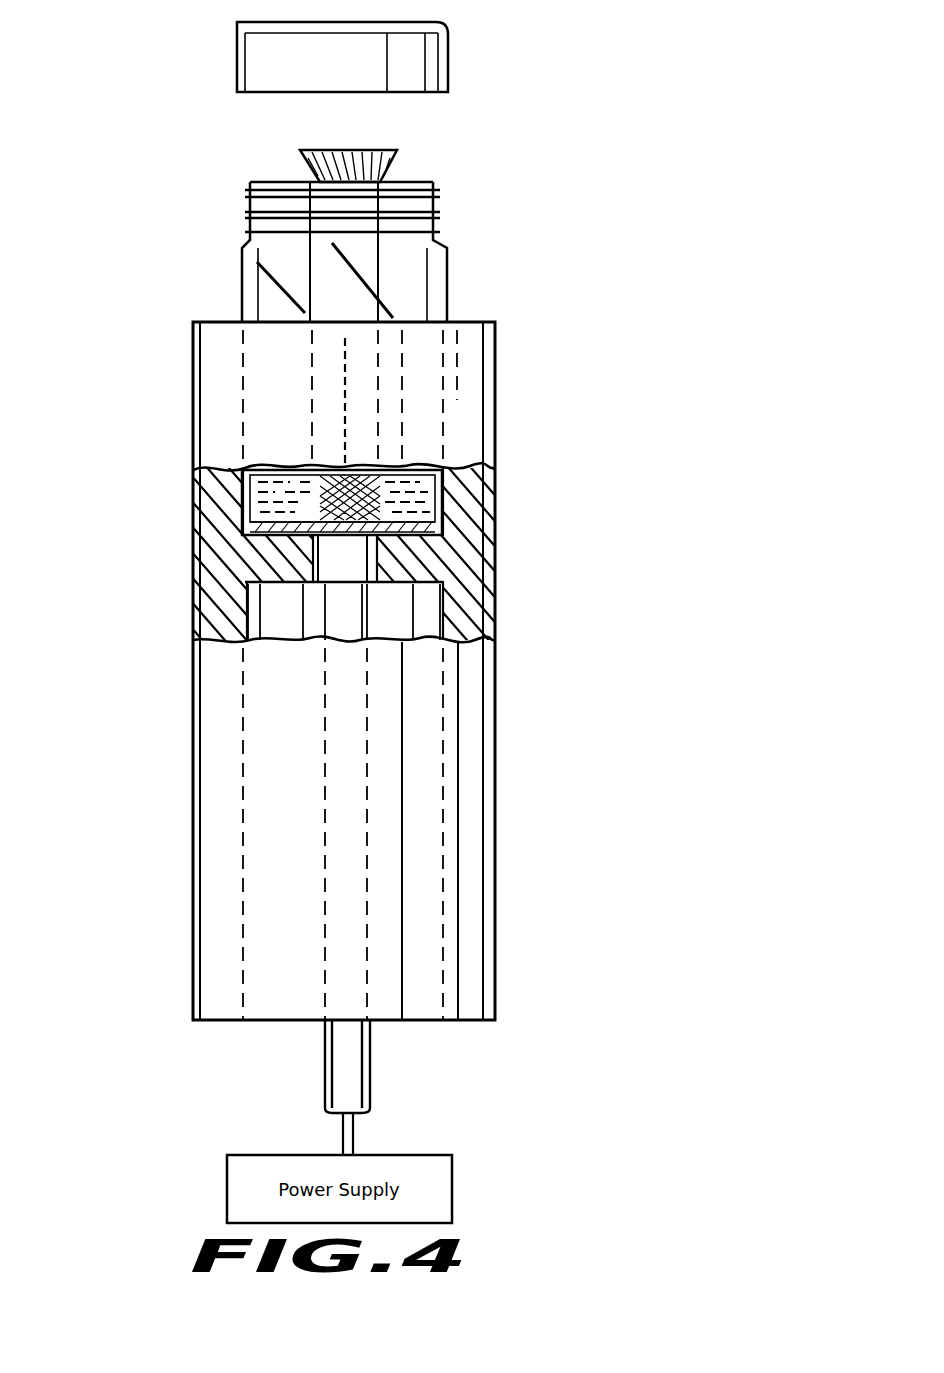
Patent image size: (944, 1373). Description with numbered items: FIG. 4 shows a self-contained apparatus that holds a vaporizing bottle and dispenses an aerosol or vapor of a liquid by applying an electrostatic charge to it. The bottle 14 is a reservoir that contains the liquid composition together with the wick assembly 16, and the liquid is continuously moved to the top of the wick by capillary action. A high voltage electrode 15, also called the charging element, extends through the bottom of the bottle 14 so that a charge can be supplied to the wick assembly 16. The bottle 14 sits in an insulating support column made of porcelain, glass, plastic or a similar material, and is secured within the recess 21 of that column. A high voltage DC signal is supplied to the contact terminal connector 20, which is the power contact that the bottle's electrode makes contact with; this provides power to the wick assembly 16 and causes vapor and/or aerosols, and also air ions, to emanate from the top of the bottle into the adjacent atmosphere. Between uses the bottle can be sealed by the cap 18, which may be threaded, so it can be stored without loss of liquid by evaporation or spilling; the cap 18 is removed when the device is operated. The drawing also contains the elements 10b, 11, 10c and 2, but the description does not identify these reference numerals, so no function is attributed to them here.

The cap 18 is at (448, 62).
The brush 10b is at (378, 184).
The bottle 14 is at (447, 280).
The sleeve 11 is at (310, 265).
The high voltage electrode 15 is at (345, 398).
The wick assembly 16 is at (203, 500).
The container bottom with cleaning material 10c is at (493, 513).
The contact terminal connector 20 is at (380, 560).
The recess 21 is at (250, 530).
The electrode 2 is at (370, 602).